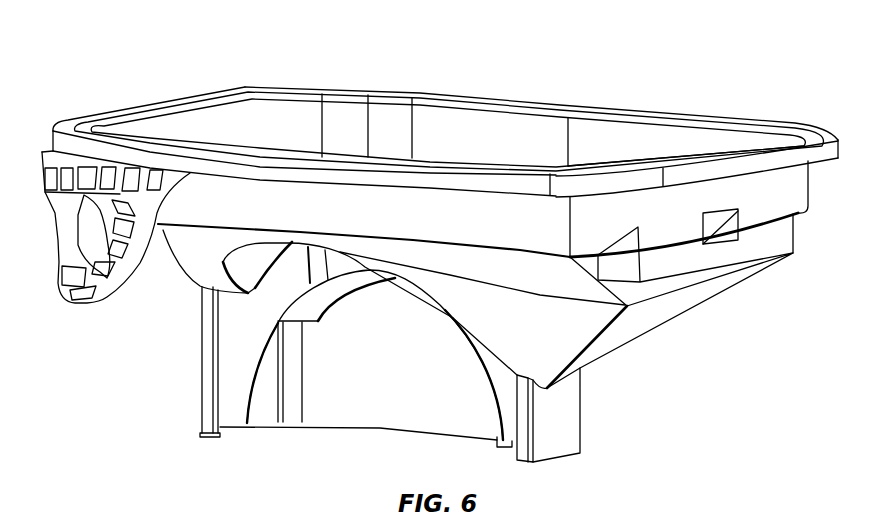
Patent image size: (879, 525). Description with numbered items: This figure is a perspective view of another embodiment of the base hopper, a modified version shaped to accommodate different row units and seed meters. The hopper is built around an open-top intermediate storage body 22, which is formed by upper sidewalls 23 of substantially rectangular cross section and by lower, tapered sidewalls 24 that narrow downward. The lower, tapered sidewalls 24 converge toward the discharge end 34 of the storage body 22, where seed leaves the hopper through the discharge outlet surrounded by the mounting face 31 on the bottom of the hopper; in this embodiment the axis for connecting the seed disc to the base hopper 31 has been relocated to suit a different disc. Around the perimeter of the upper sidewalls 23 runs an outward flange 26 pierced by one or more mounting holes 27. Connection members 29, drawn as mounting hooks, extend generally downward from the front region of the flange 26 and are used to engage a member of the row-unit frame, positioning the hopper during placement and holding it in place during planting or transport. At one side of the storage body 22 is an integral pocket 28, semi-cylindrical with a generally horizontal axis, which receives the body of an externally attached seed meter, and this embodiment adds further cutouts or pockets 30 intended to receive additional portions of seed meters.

The intermediate storage body 22 is at (447, 132).
The upper sidewalls 23 is at (623, 135).
The lower, tapered sidewalls 24 is at (667, 316).
The flange 26 is at (137, 111).
The mounting holes 27 is at (775, 121).
The integral pocket 28 is at (253, 263).
The connection members 29 is at (78, 302).
The cutouts or pockets 30 is at (338, 292).
The mounting face 31 is at (590, 58).
The discharge end 34 is at (551, 457).